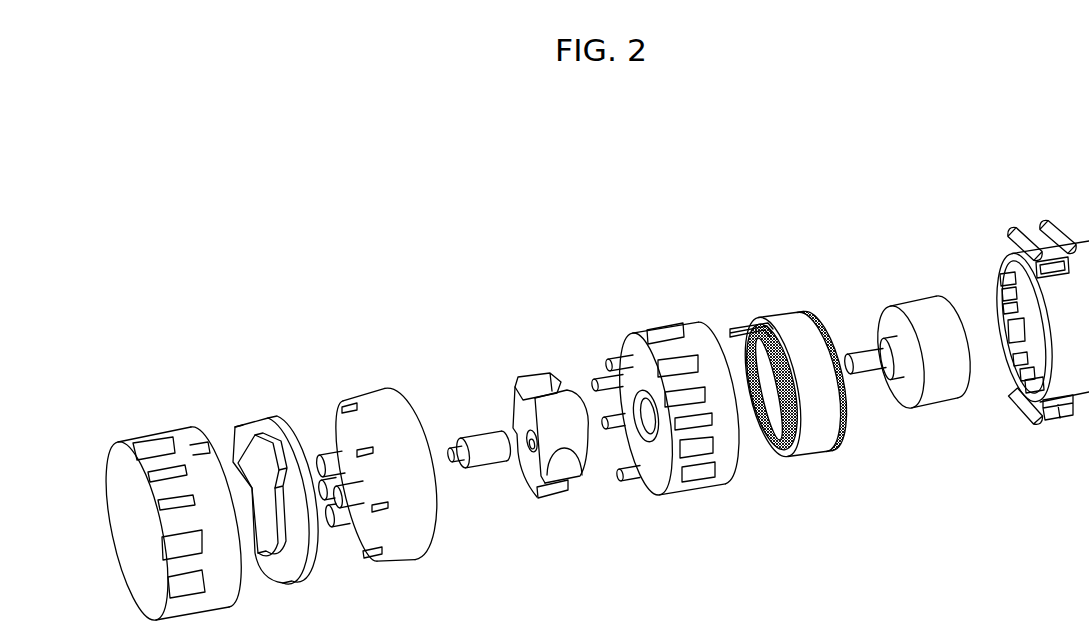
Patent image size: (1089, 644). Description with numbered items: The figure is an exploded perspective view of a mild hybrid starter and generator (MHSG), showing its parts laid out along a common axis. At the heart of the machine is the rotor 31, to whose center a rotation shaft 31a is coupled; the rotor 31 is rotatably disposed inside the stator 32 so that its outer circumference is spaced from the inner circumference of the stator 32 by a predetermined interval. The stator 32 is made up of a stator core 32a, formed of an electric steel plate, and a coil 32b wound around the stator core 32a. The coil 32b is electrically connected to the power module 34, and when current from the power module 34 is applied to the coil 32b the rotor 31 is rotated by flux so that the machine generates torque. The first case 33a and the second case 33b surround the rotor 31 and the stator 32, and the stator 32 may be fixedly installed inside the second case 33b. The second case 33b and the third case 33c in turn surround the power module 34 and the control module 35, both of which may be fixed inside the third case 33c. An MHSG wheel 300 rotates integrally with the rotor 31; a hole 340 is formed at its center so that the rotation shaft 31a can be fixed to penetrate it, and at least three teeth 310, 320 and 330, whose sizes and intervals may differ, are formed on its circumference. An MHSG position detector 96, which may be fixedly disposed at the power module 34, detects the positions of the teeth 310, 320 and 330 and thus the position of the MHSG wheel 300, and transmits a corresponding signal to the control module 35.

The rotor 31 is at (904, 318).
The rotation shaft 31a is at (865, 359).
The stator 32 is at (791, 357).
The stator core 32a is at (815, 456).
The coil 32b is at (738, 325).
The first case 33a is at (1032, 230).
The second case 33b is at (679, 316).
The third case 33c is at (151, 420).
The power module 34 is at (361, 382).
The control module 35 is at (249, 404).
The MHSG position detector 96 is at (472, 430).
The MHSG wheel 300 is at (542, 414).
The tooth 310 is at (517, 398).
The tooth 320 is at (570, 486).
The tooth 330 is at (534, 487).
The hole 340 is at (529, 449).